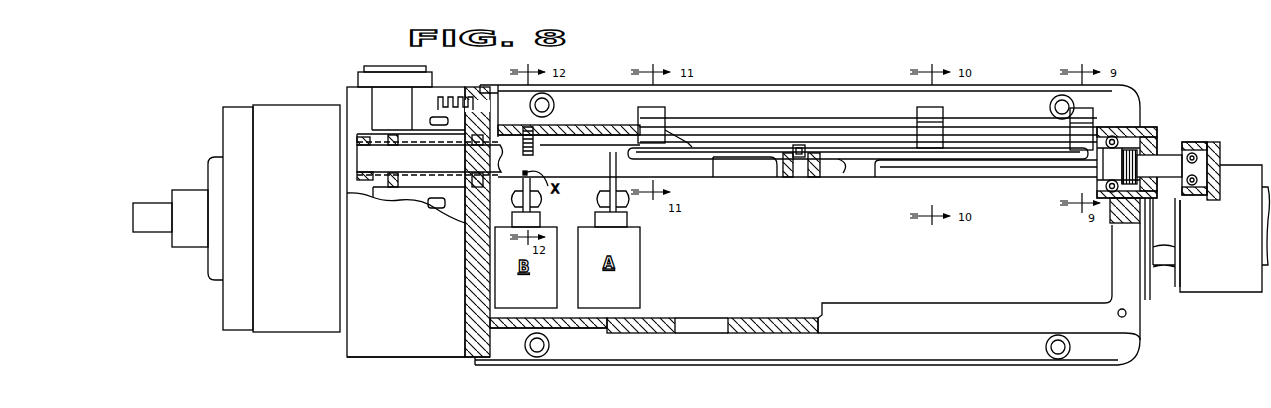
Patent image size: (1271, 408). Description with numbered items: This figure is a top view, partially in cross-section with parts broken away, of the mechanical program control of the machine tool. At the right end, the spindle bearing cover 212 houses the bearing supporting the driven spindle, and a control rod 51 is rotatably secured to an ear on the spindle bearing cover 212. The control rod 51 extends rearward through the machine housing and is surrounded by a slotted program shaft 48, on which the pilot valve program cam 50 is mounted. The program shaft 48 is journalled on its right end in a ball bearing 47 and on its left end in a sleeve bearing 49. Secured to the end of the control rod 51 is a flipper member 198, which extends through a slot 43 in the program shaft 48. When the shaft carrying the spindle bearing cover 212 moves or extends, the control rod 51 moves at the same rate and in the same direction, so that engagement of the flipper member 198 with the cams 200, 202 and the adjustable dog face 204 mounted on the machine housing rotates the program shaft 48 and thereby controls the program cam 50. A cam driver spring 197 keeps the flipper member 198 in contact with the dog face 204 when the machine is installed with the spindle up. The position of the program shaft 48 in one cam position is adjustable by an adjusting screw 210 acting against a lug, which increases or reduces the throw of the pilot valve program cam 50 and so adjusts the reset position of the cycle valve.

The slot 43 is at (718, 160).
The ball bearing 47 is at (1113, 133).
The program shaft 48 is at (903, 170).
The sleeve bearing 49 is at (357, 173).
The pilot valve program cam 50 is at (398, 188).
The control rod 51 is at (843, 172).
The cam driver spring 197 is at (1152, 142).
The flipper member 198 is at (800, 145).
The cam 200 is at (1082, 115).
The cam 202 is at (930, 113).
The adjustable dog face 204 is at (660, 113).
The adjusting screw 210 is at (534, 152).
The spindle bearing cover 212 is at (1232, 175).